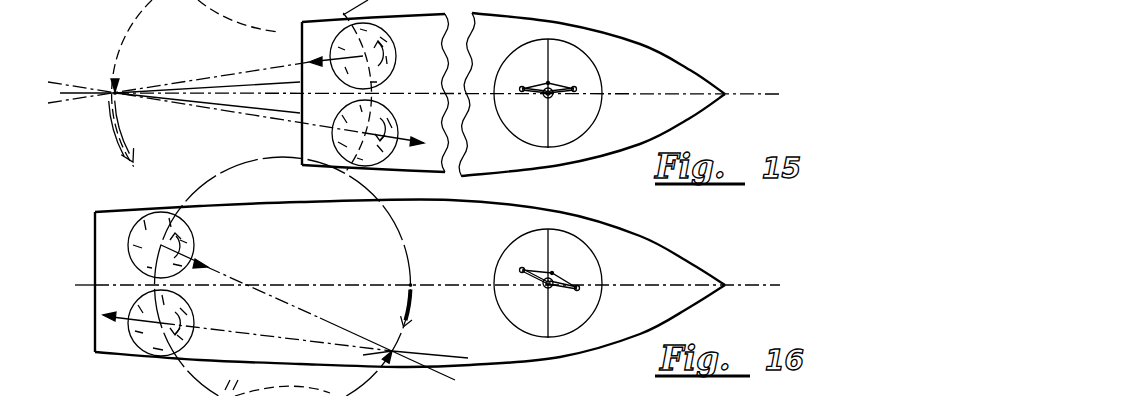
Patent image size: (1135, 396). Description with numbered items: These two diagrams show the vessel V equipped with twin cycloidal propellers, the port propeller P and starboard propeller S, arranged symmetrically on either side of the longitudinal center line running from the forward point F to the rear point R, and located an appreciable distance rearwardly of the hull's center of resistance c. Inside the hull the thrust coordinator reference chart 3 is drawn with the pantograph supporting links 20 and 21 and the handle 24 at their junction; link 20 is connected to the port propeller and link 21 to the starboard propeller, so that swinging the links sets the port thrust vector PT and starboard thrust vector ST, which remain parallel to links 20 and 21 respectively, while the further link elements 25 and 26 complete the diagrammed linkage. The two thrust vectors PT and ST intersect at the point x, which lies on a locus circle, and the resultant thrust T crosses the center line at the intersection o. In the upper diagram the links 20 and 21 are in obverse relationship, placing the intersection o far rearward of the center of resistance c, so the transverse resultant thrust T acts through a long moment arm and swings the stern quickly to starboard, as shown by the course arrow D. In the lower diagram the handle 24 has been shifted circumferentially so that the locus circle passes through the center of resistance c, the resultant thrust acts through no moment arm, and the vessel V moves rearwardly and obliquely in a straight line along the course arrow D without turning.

In FIG. 15, the vessel V is at (674, 58).
In FIG. 16, the vessel V is at (688, 255).
In FIG. 15, the rear end of center line FR R is at (79, 97).
In FIG. 16, the rear end of center line FR R is at (76, 287).
In FIG. 15, the forward end of center line FR F is at (454, 95).
In FIG. 16, the forward end of center line FR F is at (445, 286).
In FIG. 15, the resultant thrust T is at (121, 82).
In FIG. 16, the resultant thrust T is at (396, 360).
In FIG. 15, the resultant thrust center line intersection o is at (106, 105).
In FIG. 16, the resultant thrust center line intersection o is at (402, 278).
In FIG. 16, the center of resistance c is at (287, 276).
In FIG. 15, the thrust vector intersection x is at (121, 97).
In FIG. 16, the thrust vector intersection x is at (370, 358).
In FIG. 15, the course arrow D is at (128, 122).
In FIG. 16, the course arrow D is at (412, 308).
In FIG. 15, the port propeller P is at (363, 56).
In FIG. 16, the port propeller P is at (161, 245).
In FIG. 15, the starboard propeller S is at (365, 133).
In FIG. 16, the starboard propeller S is at (161, 323).
In FIG. 15, the port propeller thrust vector PT is at (313, 58).
In FIG. 16, the port propeller thrust vector PT is at (208, 262).
In FIG. 15, the starboard propeller thrust vector ST is at (414, 140).
In FIG. 16, the starboard propeller thrust vector ST is at (113, 320).
In FIG. 15, the thrust coordinator reference chart 3 is at (598, 76).
In FIG. 16, the thrust coordinator reference chart 3 is at (598, 265).
In FIG. 15, the handle 24 is at (548, 82).
In FIG. 16, the handle 24 is at (553, 273).
In FIG. 15, the supporting link 21 is at (525, 92).
In FIG. 16, the supporting link 21 is at (577, 289).
In FIG. 15, the supporting link 20 is at (571, 92).
In FIG. 16, the supporting link 20 is at (528, 277).
In FIG. 15, the control rod 25 is at (551, 98).
In FIG. 16, the control rod 25 is at (547, 286).
In FIG. 15, the control rod 26 is at (544, 98).
In FIG. 16, the control rod 26 is at (550, 287).